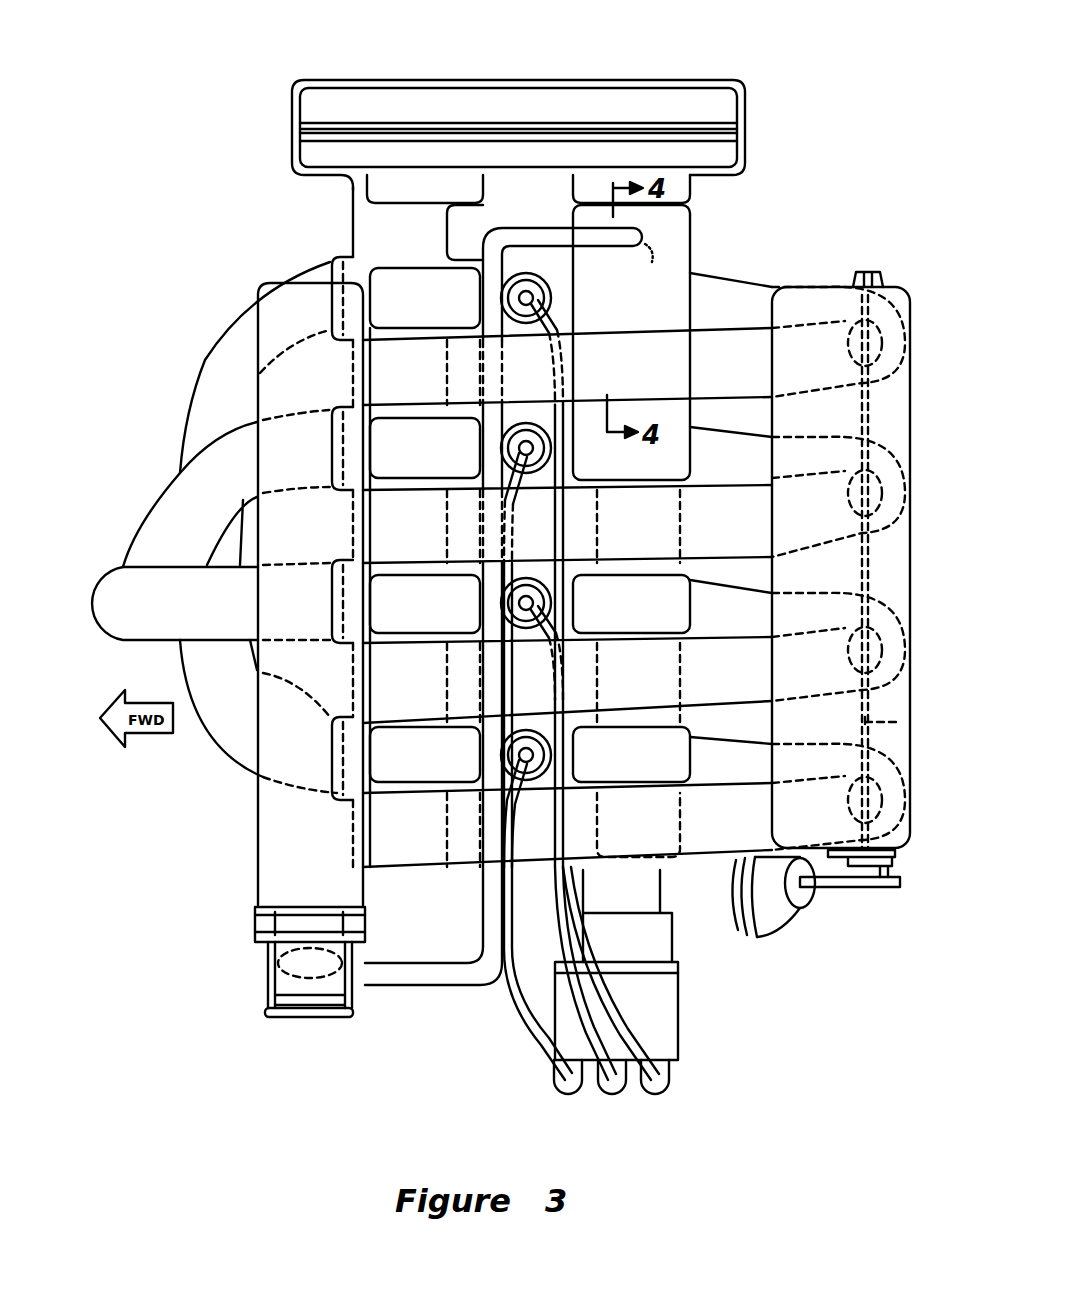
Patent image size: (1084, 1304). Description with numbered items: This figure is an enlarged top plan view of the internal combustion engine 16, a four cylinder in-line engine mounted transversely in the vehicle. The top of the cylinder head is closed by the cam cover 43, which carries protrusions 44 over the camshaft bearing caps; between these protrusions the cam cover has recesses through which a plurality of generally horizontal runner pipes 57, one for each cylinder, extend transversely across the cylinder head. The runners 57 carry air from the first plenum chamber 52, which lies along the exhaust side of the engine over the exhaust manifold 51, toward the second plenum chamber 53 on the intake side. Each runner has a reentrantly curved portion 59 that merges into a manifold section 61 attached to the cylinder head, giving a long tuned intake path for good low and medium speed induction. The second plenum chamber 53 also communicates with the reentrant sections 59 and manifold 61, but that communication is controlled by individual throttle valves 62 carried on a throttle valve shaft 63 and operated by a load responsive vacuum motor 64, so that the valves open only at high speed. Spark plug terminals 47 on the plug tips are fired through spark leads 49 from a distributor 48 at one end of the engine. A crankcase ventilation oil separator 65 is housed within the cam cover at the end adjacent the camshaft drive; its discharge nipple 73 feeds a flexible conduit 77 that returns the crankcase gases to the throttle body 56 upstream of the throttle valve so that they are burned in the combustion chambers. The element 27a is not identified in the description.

The internal combustion engine 16 is at (420, 72).
The cam cover 43 is at (350, 222).
The cylinder block 27a is at (383, 238).
The flexible conduit 77 is at (533, 232).
The discharge nipple 73 is at (651, 265).
The crankcase ventilation oil separator 65 is at (673, 233).
The protrusions 44 is at (406, 313).
The spark plug terminals 47 is at (507, 310).
The spark leads 49 is at (567, 980).
The distributor 48 is at (667, 1018).
The exhaust manifold 51 is at (108, 632).
The first plenum chamber 52 is at (220, 730).
The runner pipes 57 is at (390, 362).
The throttle body 56 is at (320, 988).
The manifold section 61 is at (745, 296).
The reentrantly curved portion 59 is at (753, 381).
The throttle valves 62 is at (905, 343).
The throttle valve shaft 63 is at (900, 722).
The second plenum chamber 53 is at (890, 838).
The vacuum motor 64 is at (815, 900).